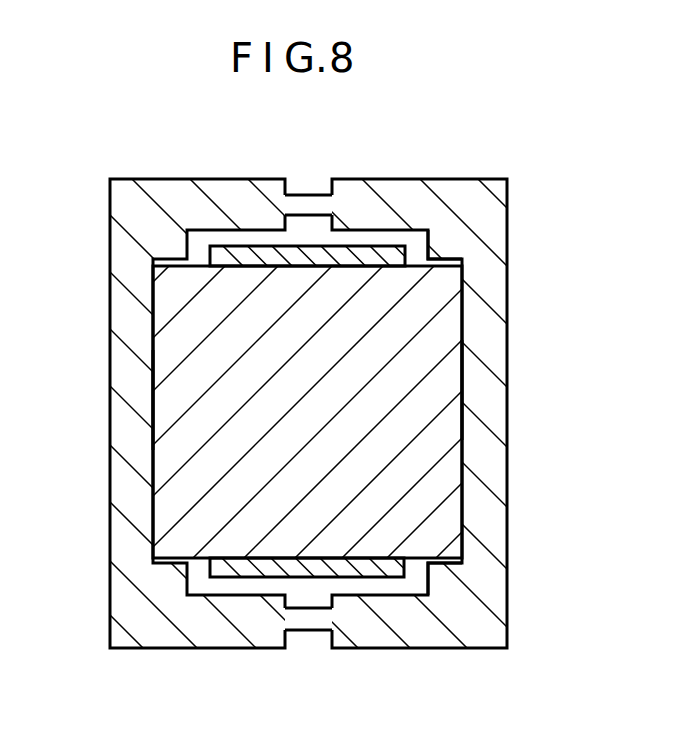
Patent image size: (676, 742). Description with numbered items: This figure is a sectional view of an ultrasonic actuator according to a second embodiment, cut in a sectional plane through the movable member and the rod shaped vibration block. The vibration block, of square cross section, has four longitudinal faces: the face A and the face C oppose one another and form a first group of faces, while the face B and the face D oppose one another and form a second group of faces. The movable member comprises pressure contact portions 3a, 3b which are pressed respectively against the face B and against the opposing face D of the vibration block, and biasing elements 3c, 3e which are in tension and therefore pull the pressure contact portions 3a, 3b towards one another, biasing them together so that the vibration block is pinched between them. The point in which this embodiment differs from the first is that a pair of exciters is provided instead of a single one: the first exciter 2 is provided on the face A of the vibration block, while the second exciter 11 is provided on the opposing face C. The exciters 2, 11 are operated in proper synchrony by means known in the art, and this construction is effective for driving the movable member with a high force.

The first exciter 2 is at (363, 257).
The second exciter 11 is at (367, 568).
The pressure contact portion 3a is at (430, 210).
The pressure contact portion 3b is at (222, 197).
The biasing element 3c is at (312, 203).
The biasing element 3e is at (310, 626).
The face A is at (421, 264).
The face B is at (462, 388).
The face C is at (418, 567).
The face D is at (153, 402).